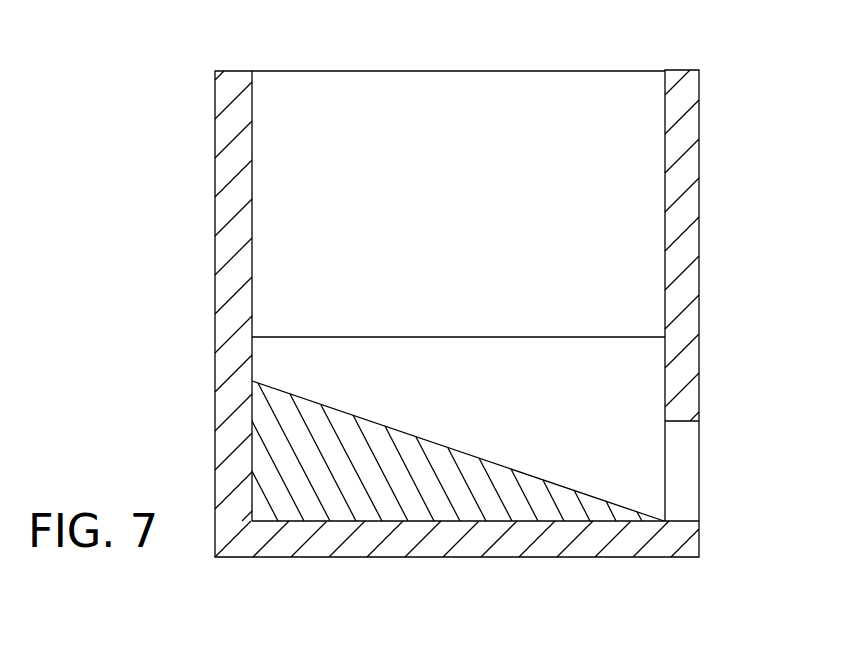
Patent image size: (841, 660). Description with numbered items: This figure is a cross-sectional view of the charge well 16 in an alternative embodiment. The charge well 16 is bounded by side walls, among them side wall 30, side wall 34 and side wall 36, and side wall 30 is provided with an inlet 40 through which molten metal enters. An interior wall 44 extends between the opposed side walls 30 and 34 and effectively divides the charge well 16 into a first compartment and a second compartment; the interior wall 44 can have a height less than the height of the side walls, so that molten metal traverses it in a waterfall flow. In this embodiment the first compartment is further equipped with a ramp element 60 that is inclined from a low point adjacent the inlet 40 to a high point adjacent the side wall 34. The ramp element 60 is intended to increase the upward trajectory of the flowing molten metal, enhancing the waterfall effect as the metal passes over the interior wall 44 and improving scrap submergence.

The charge well 16 is at (470, 279).
The side wall 30 is at (686, 173).
The side wall 34 is at (230, 175).
The side wall 36 is at (473, 70).
The inlet 40 is at (687, 463).
The interior wall 44 is at (508, 352).
The ramp element 60 is at (357, 502).